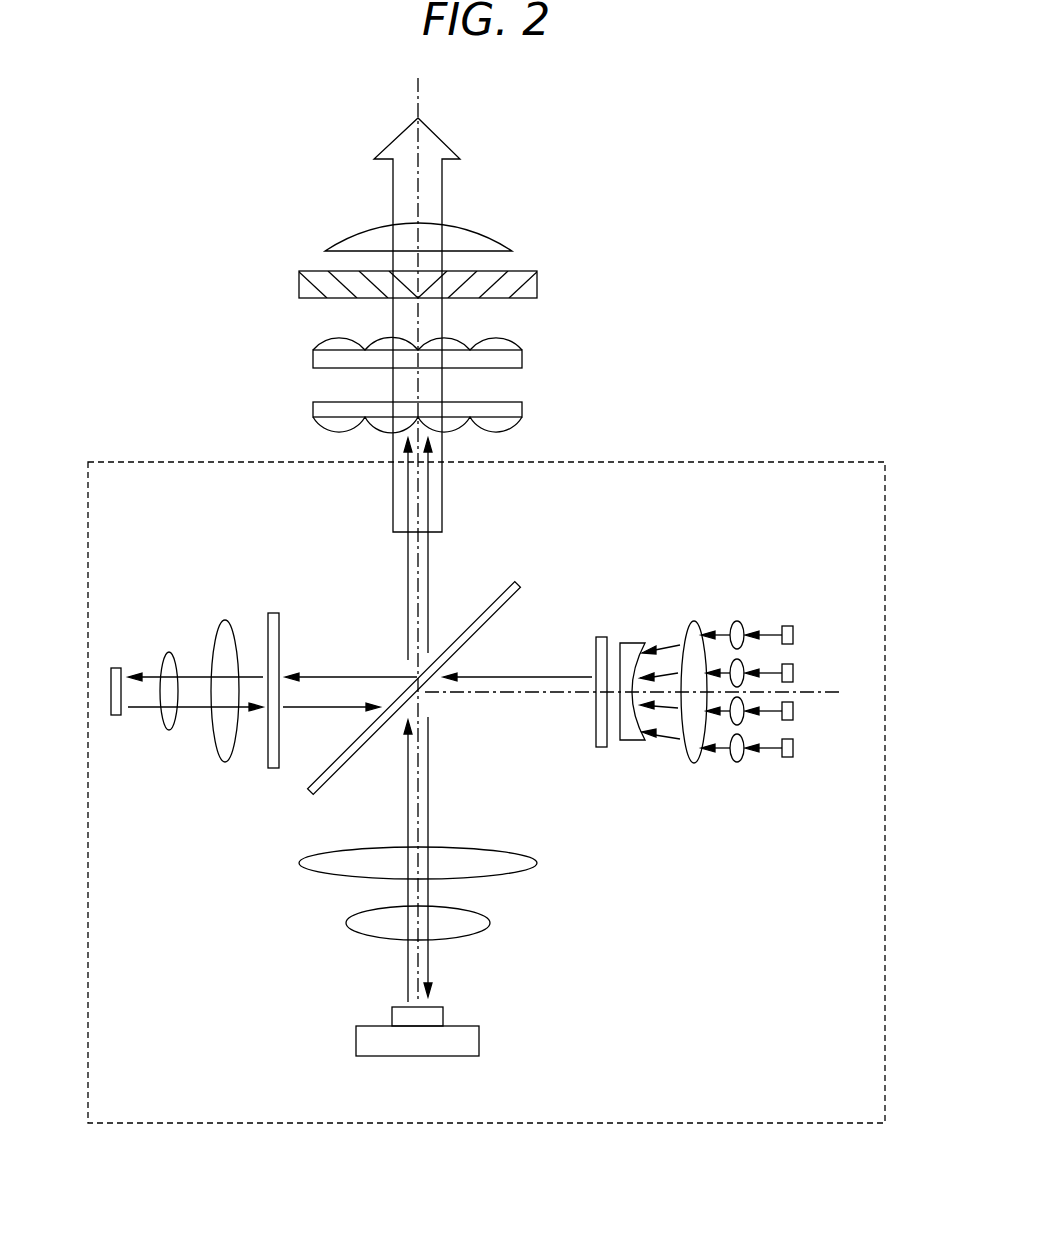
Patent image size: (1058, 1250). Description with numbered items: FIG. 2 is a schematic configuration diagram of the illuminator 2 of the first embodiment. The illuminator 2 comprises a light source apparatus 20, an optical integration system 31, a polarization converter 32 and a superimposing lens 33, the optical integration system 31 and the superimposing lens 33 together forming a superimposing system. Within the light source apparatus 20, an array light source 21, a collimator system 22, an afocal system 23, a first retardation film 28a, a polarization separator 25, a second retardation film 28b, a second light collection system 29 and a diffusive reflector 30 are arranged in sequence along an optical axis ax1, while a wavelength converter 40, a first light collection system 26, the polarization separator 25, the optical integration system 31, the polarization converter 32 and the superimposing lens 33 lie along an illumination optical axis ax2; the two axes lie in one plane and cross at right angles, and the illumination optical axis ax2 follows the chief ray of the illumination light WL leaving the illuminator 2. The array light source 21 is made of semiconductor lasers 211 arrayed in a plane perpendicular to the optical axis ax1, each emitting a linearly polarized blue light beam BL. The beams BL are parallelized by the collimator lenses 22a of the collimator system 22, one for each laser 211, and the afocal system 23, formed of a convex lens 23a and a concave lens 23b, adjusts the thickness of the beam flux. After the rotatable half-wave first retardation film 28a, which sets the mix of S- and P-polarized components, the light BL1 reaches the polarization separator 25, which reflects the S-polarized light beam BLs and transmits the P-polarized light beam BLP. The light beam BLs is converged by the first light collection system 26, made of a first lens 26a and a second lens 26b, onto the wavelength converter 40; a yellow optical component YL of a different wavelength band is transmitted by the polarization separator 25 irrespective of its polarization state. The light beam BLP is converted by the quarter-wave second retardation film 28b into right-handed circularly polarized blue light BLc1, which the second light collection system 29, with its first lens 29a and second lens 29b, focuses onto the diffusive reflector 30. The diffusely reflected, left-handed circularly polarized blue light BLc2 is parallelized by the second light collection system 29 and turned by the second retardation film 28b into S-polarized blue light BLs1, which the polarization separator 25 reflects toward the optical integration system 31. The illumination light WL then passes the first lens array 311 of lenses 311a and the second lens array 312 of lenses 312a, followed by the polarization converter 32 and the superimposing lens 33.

The illuminator 2 is at (806, 176).
The light source apparatus 20 is at (770, 462).
The array light source 21 is at (831, 642).
The semiconductor laser 211 is at (795, 633).
The collimator system 22 is at (748, 624).
The collimator lens 22a is at (740, 606).
The afocal system 23 is at (675, 642).
The convex lens 23a is at (692, 622).
The concave lens 23b is at (634, 643).
The polarization separator 25 is at (507, 595).
The first light collection system 26 is at (487, 886).
The first lens 26a is at (528, 853).
The second lens 26b is at (470, 915).
The first retardation film 28a is at (600, 637).
The second retardation film 28b is at (272, 613).
The second light collection system 29 is at (185, 633).
The first lens 29a is at (160, 662).
The second lens 29b is at (212, 620).
The diffusive reflector 30 is at (115, 668).
The optical integration system 31 is at (435, 379).
The first lens array 311 is at (413, 414).
The lens 311a is at (333, 426).
The second lens array 312 is at (413, 346).
The lens 312a is at (332, 345).
The polarization converter 32 is at (537, 288).
The superimposing lens 33 is at (500, 229).
The wavelength converter 40 is at (336, 1040).
The illumination light WL is at (393, 197).
The fluorescent light YL is at (408, 577).
The blue light beam BL is at (768, 635).
The blue light BL1 is at (550, 677).
The P-polarized light beam BLP is at (330, 677).
The S-polarized light beam BLs is at (428, 816).
The S-polarized blue light BLs1 is at (428, 557).
The right-handed circularly polarized blue light BLc1 is at (253, 672).
The diffusively reflected blue light BLc2 is at (243, 707).
The optical axis ax1 is at (819, 693).
The illumination optical axis ax2 is at (421, 83).